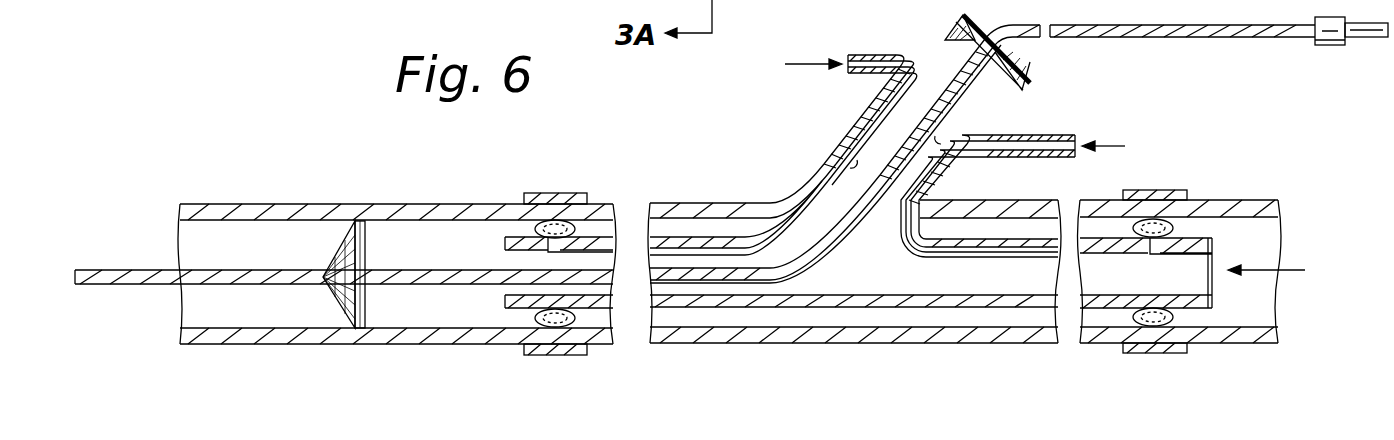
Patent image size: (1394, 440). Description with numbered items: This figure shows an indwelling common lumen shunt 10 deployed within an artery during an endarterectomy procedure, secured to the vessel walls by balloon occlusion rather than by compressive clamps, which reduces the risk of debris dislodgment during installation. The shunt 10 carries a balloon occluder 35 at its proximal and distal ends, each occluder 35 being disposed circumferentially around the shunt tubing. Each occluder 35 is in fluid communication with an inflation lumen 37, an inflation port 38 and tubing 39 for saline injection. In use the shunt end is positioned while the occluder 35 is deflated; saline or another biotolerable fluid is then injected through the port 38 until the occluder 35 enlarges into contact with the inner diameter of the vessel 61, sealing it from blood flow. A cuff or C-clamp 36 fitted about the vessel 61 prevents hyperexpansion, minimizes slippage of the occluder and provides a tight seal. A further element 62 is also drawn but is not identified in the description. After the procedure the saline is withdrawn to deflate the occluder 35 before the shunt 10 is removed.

The shunt 10 is at (1020, 236).
The balloon occluder 35 is at (528, 322).
The cuff or C-clamp 36 is at (548, 193).
The inflation lumen 37 is at (828, 172).
The inflation port 38 is at (877, 82).
The tubing for saline injection 39 is at (853, 73).
The vessel 61 is at (303, 0).
The inner wire 62 is at (775, 0).